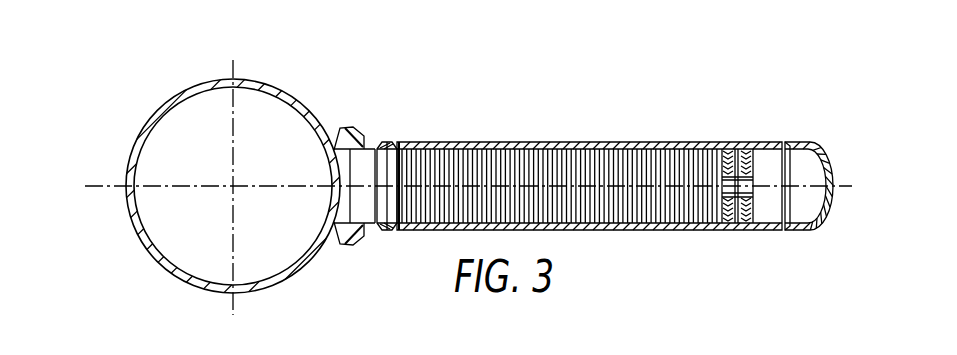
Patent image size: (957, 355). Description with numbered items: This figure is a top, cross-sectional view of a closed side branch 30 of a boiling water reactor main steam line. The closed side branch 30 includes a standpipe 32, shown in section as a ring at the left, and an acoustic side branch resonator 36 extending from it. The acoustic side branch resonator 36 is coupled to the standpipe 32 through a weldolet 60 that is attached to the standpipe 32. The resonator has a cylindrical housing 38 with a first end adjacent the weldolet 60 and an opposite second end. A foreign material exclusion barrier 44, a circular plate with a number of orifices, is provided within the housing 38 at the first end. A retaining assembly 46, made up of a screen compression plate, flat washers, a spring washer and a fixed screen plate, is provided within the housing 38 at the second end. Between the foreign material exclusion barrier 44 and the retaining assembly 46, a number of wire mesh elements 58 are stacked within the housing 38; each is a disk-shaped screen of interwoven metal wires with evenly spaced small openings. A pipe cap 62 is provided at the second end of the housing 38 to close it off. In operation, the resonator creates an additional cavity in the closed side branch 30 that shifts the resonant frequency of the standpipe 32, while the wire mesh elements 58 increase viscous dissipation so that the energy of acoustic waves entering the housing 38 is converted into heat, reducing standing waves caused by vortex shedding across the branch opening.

The closed side branch 30 is at (706, 112).
The standpipe 32 is at (197, 88).
The acoustic side branch resonator 36 is at (624, 231).
The cylindrical housing 38 is at (620, 142).
The foreign material exclusion barrier 44 is at (401, 231).
The retaining assembly 46 is at (745, 232).
The wire mesh elements 58 is at (471, 150).
The weldolet 60 is at (348, 127).
The pipe cap 62 is at (800, 142).